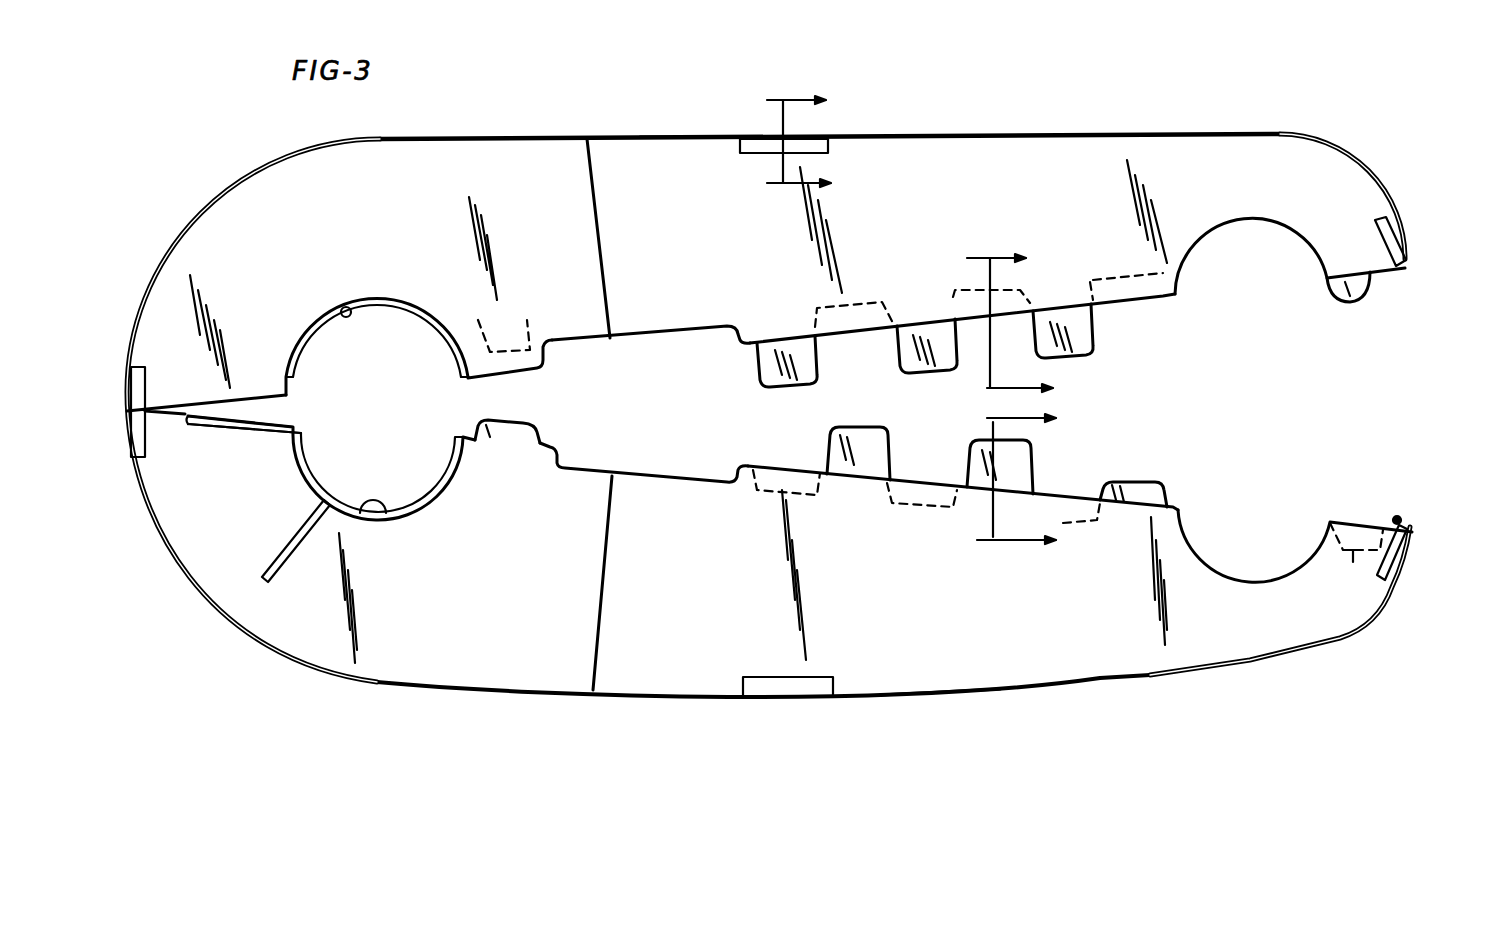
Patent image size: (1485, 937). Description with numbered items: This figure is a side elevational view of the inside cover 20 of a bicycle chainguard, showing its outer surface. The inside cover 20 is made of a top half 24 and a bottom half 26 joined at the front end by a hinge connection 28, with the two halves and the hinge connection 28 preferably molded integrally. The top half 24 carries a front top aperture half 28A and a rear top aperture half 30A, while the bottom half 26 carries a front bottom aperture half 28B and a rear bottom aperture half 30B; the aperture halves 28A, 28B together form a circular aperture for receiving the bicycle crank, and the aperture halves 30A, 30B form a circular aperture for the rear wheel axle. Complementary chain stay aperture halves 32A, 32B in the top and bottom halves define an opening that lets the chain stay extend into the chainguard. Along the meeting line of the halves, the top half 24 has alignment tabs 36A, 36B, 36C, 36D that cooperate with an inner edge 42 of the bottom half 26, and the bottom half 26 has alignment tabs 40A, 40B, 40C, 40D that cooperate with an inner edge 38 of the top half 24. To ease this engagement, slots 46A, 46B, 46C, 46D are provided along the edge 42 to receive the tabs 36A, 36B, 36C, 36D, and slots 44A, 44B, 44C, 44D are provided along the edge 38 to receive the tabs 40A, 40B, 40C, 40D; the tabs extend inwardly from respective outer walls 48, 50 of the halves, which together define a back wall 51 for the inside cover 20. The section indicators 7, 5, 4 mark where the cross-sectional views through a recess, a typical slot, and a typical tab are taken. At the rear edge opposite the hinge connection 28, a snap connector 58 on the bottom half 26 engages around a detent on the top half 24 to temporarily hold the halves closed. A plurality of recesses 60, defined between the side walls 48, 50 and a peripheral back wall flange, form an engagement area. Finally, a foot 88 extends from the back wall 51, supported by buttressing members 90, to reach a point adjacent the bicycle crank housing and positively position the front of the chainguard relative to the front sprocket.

The inside cover 20 is at (369, 683).
The top half 24 is at (680, 135).
The bottom half 26 is at (620, 700).
The hinge connection 28 is at (130, 410).
The front top aperture half 28A is at (343, 308).
The front bottom aperture half 28B is at (393, 516).
The rear top aperture half 30A is at (1223, 220).
The rear bottom aperture half 30B is at (1230, 577).
The chain stay aperture half 32A is at (670, 333).
The chain stay aperture half 32B is at (612, 474).
The alignment tab 36A is at (758, 378).
The alignment tab 36B is at (903, 353).
The alignment tab 36C is at (1093, 350).
The alignment tab 36D is at (1350, 300).
The inner edge 38 is at (1135, 300).
The alignment tab 40A is at (477, 428).
The alignment tab 40B is at (873, 460).
The alignment tab 40C is at (1017, 470).
The alignment tab 40D is at (1163, 483).
The inner edge 42 is at (1070, 493).
The slot 44A is at (488, 352).
The slot 44B is at (815, 320).
The slot 44C is at (953, 297).
The slot 44D is at (1090, 282).
The slot 46A is at (777, 495).
The slot 46B is at (947, 507).
The slot 46C is at (1063, 523).
The slot 46D is at (1353, 553).
The outer wall 48 is at (587, 132).
The outer wall 50 is at (938, 677).
The back wall 51 is at (205, 245).
The snap connector 58 is at (1396, 516).
The recess 60 is at (760, 140).
The foot 88 is at (293, 468).
The buttressing member 90 is at (162, 573).
The section line 7- 7 is at (784, 142).
The section line 5- 5 is at (997, 327).
The section line 4- 4 is at (1006, 479).